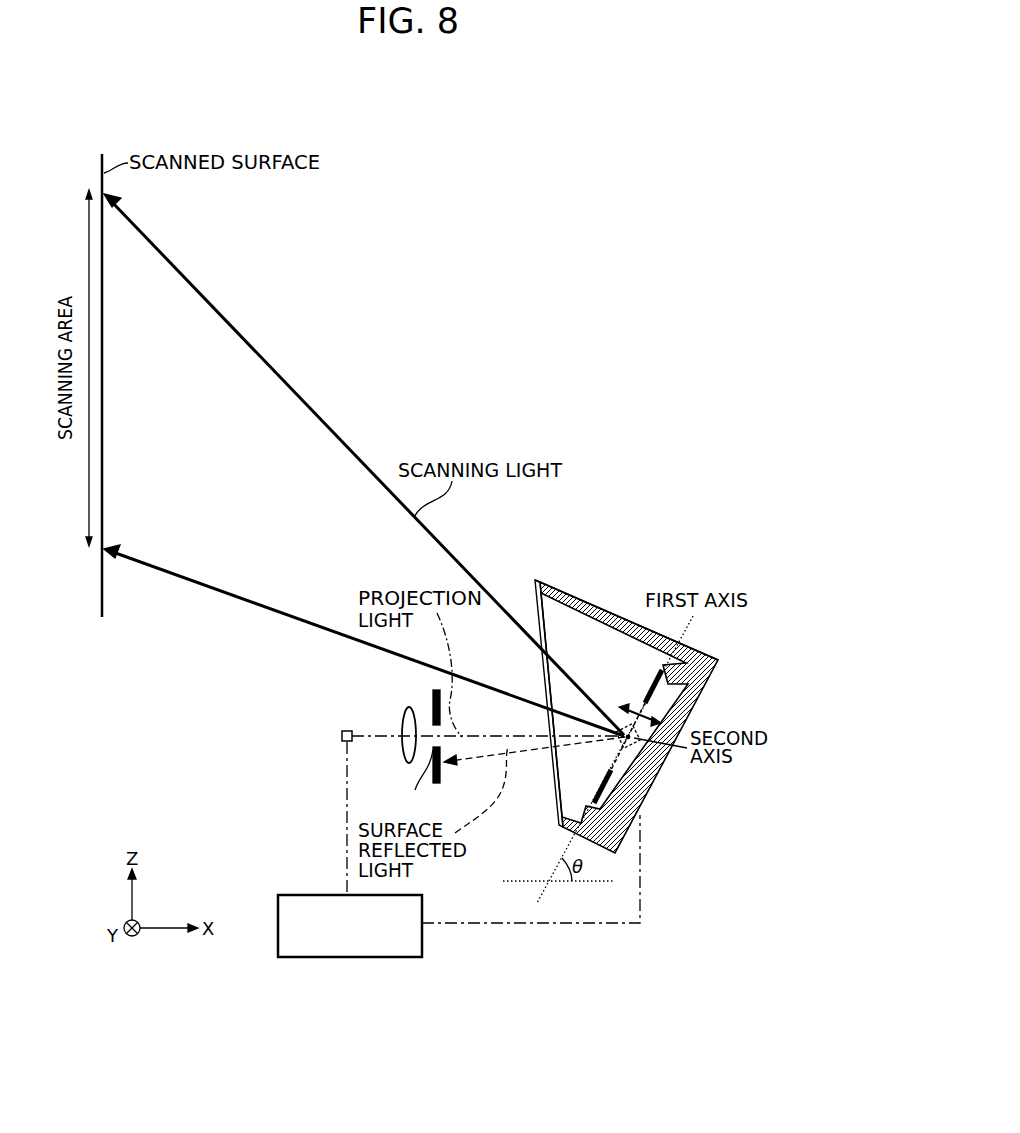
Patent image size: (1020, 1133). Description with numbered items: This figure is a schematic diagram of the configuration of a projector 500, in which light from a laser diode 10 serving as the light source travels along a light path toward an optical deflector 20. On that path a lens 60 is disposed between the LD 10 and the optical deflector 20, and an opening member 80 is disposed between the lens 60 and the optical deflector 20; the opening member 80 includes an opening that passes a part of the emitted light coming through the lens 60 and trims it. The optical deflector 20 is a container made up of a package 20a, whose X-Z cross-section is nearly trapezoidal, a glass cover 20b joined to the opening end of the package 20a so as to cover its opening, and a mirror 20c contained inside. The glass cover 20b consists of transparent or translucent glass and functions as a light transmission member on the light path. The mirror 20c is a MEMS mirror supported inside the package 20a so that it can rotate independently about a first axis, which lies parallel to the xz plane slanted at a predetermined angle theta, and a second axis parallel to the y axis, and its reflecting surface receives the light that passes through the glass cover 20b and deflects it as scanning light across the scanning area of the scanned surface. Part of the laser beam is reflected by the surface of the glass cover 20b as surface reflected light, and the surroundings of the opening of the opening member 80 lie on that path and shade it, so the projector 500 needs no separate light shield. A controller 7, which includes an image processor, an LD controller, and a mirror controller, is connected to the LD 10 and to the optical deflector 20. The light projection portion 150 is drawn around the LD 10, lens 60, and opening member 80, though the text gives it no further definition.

The projector 500 is at (613, 457).
The light projection unit 150 is at (318, 739).
The laser diode 10 is at (342, 737).
The lens 60 is at (404, 712).
The opening member 80 is at (433, 693).
The optical deflector 20 is at (614, 688).
The package 20a is at (594, 603).
The glass cover 20b is at (556, 808).
The mirror 20c is at (640, 757).
The controller 7 is at (305, 895).